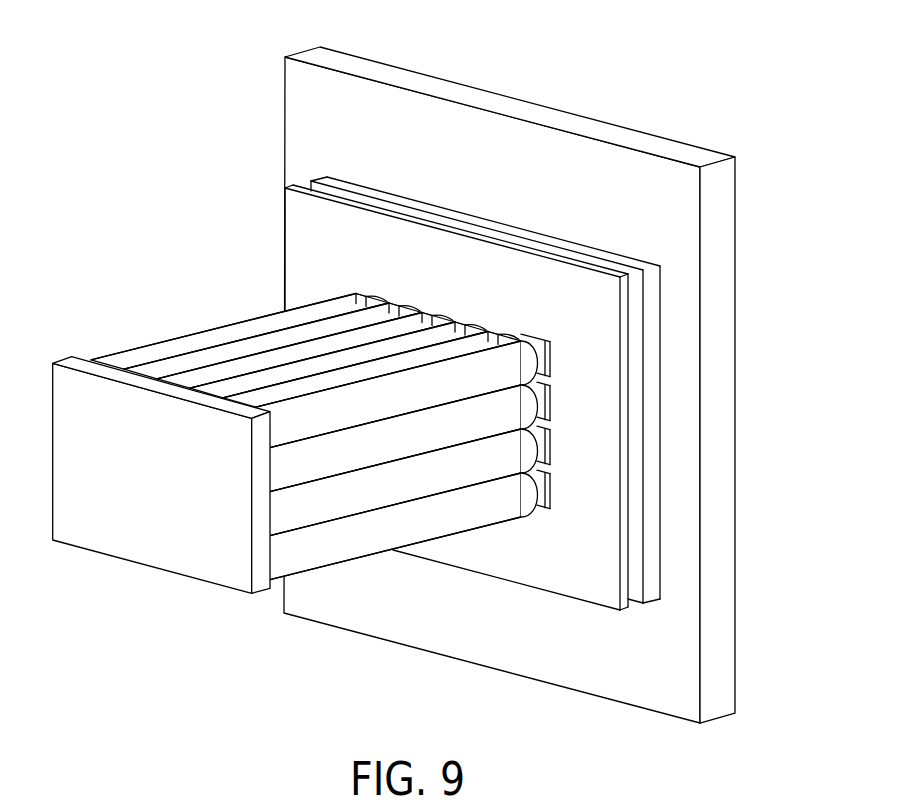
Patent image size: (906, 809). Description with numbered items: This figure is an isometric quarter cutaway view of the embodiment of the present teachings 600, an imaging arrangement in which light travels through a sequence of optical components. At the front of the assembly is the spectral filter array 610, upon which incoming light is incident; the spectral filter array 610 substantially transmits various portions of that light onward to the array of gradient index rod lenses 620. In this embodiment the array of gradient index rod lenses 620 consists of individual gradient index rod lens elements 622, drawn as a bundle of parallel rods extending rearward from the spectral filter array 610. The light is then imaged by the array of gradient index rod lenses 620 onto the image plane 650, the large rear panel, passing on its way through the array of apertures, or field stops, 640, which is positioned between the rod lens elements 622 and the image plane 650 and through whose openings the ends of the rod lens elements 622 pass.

The embodiment of the present teachings 600 is at (180, 93).
The spectral filter array 610 is at (150, 563).
The array of gradient index rod lenses 620 is at (222, 326).
The gradient index rod lens elements 622 is at (314, 442).
The array of apertures, or field stops 640 is at (555, 570).
The image plane 650 is at (706, 724).